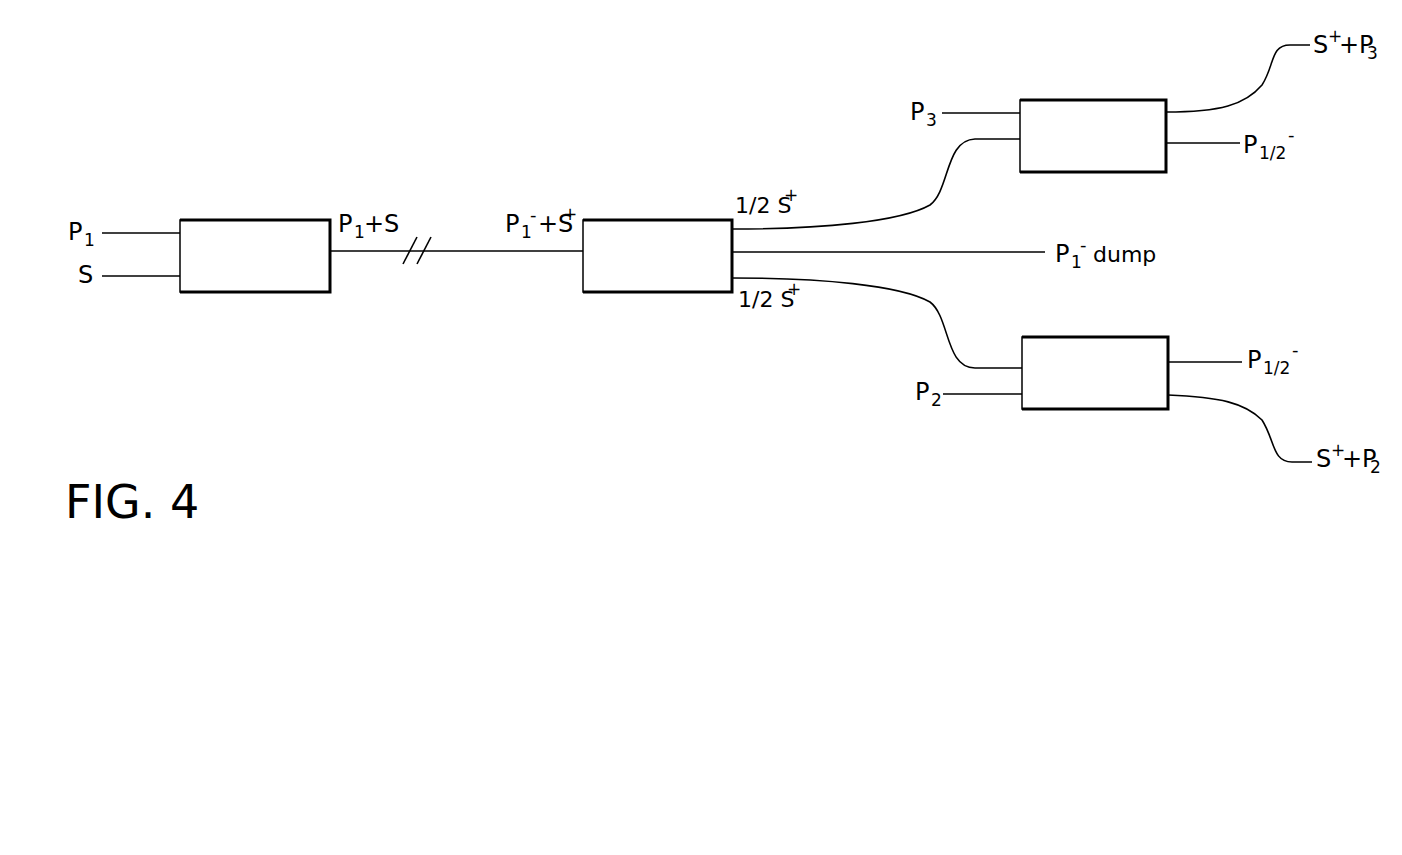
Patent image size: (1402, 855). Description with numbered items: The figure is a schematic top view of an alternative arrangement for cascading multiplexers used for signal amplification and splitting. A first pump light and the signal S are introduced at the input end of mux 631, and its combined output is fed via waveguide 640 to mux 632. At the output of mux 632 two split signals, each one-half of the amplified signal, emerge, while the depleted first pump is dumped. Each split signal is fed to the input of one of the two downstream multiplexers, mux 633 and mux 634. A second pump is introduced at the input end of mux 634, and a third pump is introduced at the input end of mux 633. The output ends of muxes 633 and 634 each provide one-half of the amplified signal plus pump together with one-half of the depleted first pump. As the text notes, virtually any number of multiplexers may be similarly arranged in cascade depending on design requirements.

The mux 631 is at (283, 283).
The waveguide 640 is at (527, 251).
The mux 632 is at (658, 280).
The mux 633 is at (1072, 110).
The mux 634 is at (1073, 397).